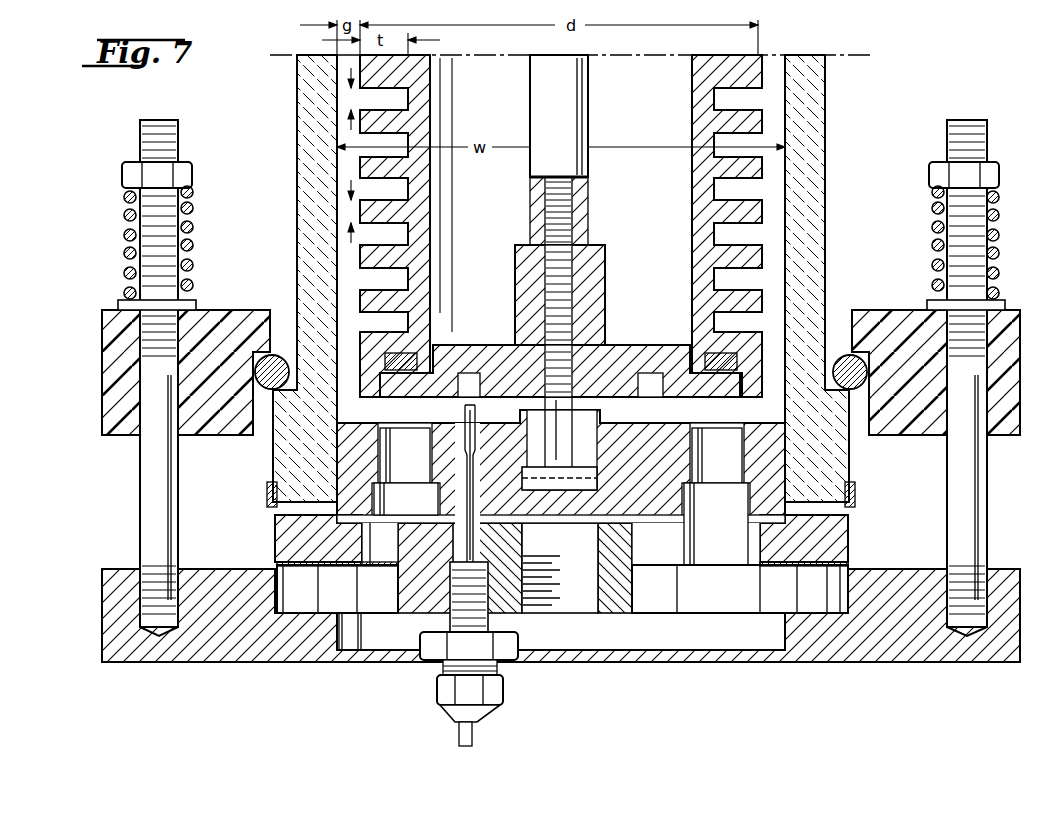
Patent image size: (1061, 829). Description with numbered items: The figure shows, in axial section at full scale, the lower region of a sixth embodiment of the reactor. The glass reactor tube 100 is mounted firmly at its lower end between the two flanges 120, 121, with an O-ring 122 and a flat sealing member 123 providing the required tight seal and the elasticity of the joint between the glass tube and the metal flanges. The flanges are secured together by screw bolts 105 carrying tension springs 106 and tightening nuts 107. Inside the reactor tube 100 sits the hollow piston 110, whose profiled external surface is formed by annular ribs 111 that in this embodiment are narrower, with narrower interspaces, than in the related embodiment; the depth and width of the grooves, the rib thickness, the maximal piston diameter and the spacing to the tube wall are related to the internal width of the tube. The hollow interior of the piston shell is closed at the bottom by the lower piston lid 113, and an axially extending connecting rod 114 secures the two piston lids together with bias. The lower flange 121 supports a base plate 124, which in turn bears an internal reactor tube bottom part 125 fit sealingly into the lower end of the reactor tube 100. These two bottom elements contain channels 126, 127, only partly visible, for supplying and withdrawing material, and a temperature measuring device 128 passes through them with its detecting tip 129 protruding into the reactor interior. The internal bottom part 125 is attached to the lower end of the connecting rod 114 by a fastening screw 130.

The reactor tube 100 is at (818, 164).
The screw bolts 105 is at (152, 498).
The tension springs 106 is at (128, 236).
The tightening nuts 107 is at (122, 178).
The piston 110 is at (758, 102).
The ribs 111 is at (747, 117).
The lower piston lid 113 is at (648, 355).
The connecting rod 114 is at (580, 128).
The flange 120 is at (897, 315).
The lower flange 121 is at (896, 578).
The O-ring 122 is at (868, 360).
The flat sealing member 123 is at (850, 501).
The base plate 124 is at (689, 605).
The internal reactor tube bottom part 125 is at (277, 535).
The channel 126 is at (387, 468).
The channel 127 is at (733, 457).
The temperature measuring device 128 is at (447, 597).
The detecting tip 129 is at (463, 416).
The fastening screw 130 is at (517, 347).